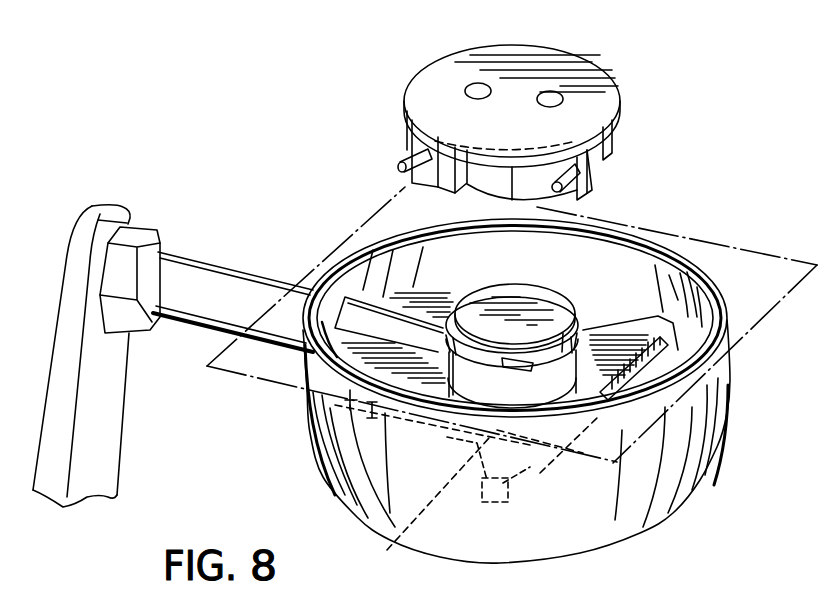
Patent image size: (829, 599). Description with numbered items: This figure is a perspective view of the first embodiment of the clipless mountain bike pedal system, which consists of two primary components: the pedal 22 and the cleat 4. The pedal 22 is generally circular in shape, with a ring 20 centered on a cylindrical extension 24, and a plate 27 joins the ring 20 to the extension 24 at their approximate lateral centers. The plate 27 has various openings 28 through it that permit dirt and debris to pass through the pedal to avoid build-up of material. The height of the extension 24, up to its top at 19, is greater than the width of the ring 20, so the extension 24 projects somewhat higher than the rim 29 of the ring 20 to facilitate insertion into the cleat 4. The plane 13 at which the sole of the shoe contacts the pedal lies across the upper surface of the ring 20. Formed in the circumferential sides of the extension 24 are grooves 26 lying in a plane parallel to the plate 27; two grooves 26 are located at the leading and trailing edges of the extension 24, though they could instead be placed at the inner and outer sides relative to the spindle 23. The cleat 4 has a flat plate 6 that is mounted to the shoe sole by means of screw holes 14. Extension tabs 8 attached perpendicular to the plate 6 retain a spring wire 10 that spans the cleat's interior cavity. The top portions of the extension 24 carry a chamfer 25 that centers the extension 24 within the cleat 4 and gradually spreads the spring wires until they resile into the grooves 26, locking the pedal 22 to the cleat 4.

The cleat 4 is at (635, 50).
The flat plate 6 is at (422, 83).
The extension tabs 8 is at (436, 188).
The spring wire 10 is at (478, 131).
The plane 13 is at (788, 260).
The screw holes 14 is at (543, 100).
The top of extension 19 is at (522, 297).
The ring 20 is at (683, 493).
The pedal 22 is at (747, 232).
The spindle 23 is at (185, 268).
The cylindrical extension 24 is at (479, 392).
The chamfer 25 is at (580, 328).
The grooves 26 is at (506, 365).
The plate 27 is at (603, 343).
The openings 28 is at (660, 312).
The rim 29 is at (443, 222).